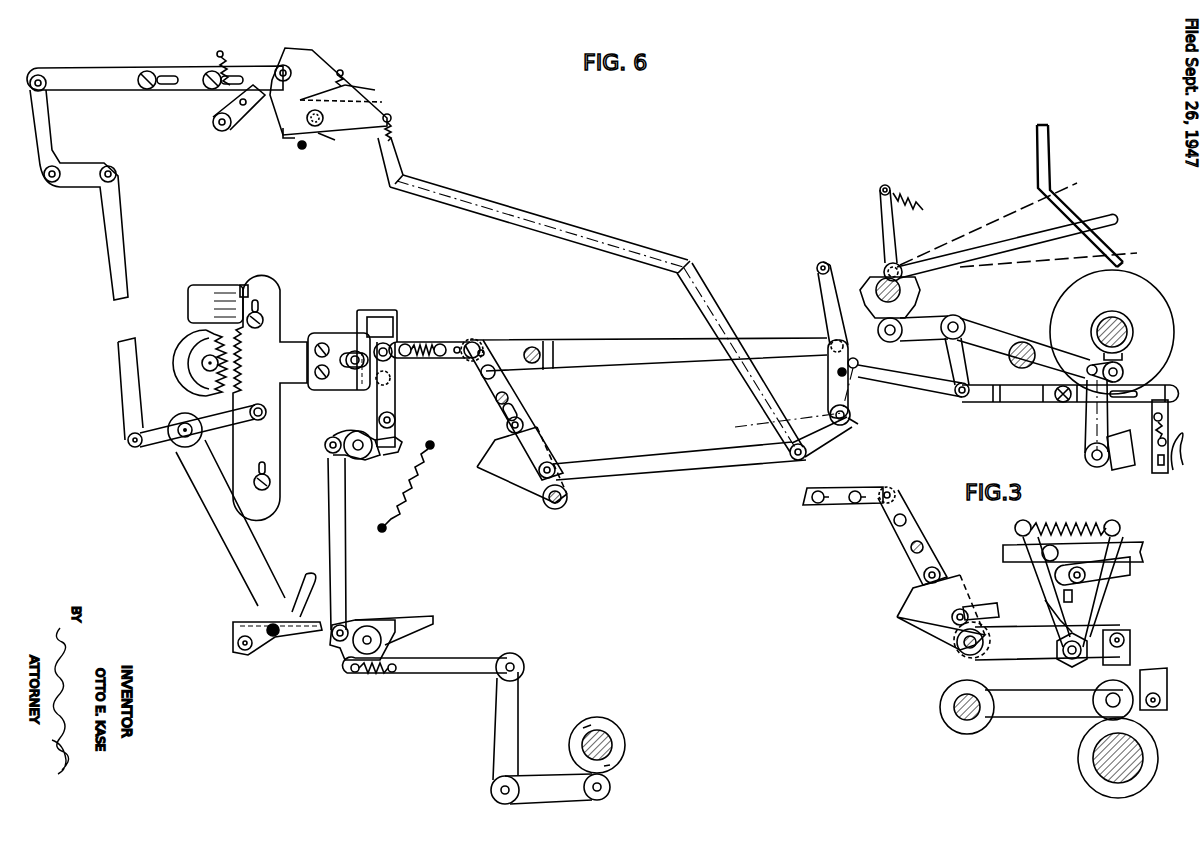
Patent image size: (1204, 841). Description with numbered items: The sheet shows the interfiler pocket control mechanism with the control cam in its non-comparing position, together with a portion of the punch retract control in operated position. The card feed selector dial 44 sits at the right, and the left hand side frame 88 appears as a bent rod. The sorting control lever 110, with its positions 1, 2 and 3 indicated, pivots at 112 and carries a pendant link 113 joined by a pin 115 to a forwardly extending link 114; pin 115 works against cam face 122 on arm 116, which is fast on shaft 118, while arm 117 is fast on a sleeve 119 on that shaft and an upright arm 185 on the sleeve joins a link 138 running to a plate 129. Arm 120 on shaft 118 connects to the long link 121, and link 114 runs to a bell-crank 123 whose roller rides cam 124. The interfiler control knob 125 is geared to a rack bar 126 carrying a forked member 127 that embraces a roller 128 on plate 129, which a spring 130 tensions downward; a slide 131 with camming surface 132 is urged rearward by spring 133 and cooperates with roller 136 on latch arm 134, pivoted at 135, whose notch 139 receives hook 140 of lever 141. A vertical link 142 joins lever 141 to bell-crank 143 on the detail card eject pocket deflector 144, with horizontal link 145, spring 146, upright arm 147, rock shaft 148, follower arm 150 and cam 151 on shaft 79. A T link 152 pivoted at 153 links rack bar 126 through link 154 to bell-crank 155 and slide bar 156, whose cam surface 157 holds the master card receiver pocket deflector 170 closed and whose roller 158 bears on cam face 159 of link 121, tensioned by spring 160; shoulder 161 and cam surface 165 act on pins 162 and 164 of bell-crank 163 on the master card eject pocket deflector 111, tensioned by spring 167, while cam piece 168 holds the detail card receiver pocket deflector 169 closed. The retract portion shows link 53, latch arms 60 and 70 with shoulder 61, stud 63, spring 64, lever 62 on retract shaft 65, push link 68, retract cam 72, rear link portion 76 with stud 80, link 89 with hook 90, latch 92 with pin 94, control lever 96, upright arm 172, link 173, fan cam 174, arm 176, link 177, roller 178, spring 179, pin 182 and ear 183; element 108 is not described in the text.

In FIG. 6, the position 1 of sorting control lever 1 is at (997, 218).
In FIG. 6, the position 2 of sorting control lever 2 is at (1116, 219).
In FIG. 6, the position 3 of sorting control lever 3 is at (1054, 255).
In FIG. 6, the card feed selector dial 44 is at (1150, 295).
In FIG. 3, the link 53 is at (1135, 542).
In FIG. 3, the latch arm 60 is at (1060, 596).
In FIG. 3, the shoulder 61 is at (1045, 604).
In FIG. 3, the lever 62 is at (1020, 652).
In FIG. 3, the stud 63 is at (1070, 632).
In FIG. 3, the spring 64 is at (1063, 526).
In FIG. 6, the retract shaft 65 is at (566, 503).
In FIG. 3, the retract shaft 65 is at (975, 655).
In FIG. 3, the push link 68 is at (1142, 665).
In FIG. 3, the latch arm 70 is at (1100, 608).
In FIG. 3, the retract cam 72 is at (1158, 760).
In FIG. 3, the rear portion of compound link 76 is at (1132, 566).
In FIG. 6, the shaft 79 is at (608, 728).
In FIG. 3, the shaft 79 is at (1135, 746).
In FIG. 3, the stud 80 is at (1086, 580).
In FIG. 6, the left hand side frame 88 is at (1050, 132).
In FIG. 6, the link 89 is at (1008, 404).
In FIG. 6, the hooked portion 90 is at (1172, 375).
In FIG. 6, the latch 92 is at (1152, 422).
In FIG. 6, the pin 94 is at (1158, 452).
In FIG. 6, the control lever 96 is at (1125, 468).
In FIG. 6, the hook 108 is at (1174, 466).
In FIG. 6, the sorting control lever 110 is at (1005, 244).
In FIG. 6, the master card eject pocket deflector 111 is at (390, 101).
In FIG. 6, the pivot 112 is at (897, 262).
In FIG. 6, the pendant link 113 is at (818, 298).
In FIG. 6, the link 114 is at (905, 376).
In FIG. 6, the pin 115 is at (838, 376).
In FIG. 6, the arm 116 is at (858, 390).
In FIG. 6, the arm 117 is at (830, 412).
In FIG. 6, the shaft 118 is at (845, 426).
In FIG. 6, the sleeve 119 is at (858, 424).
In FIG. 6, the arm 120 is at (818, 452).
In FIG. 6, the link 121 is at (750, 392).
In FIG. 6, the cam face 122 is at (858, 361).
In FIG. 6, the bell-crank 123 is at (950, 363).
In FIG. 6, the cam 124 is at (920, 290).
In FIG. 6, the interfiler control knob 125 is at (180, 352).
In FIG. 6, the rack bar 126 is at (274, 292).
In FIG. 6, the forked member 127 is at (316, 333).
In FIG. 6, the roller 128 is at (352, 350).
In FIG. 6, the plate 129 is at (378, 310).
In FIG. 6, the spring 130 is at (410, 510).
In FIG. 6, the slide 131 is at (430, 340).
In FIG. 3, the slide 131 is at (832, 505).
In FIG. 6, the camming surface 132 is at (400, 340).
In FIG. 6, the spring 133 is at (468, 341).
In FIG. 6, the latch arm 134 is at (397, 398).
In FIG. 6, the pivot 135 is at (376, 382).
In FIG. 6, the roller 136 is at (379, 327).
In FIG. 6, the link 138 is at (617, 341).
In FIG. 6, the notch 139 is at (393, 455).
In FIG. 6, the hook 140 is at (358, 459).
In FIG. 6, the lever 141 is at (345, 434).
In FIG. 6, the vertical link 142 is at (328, 520).
In FIG. 6, the bell-crank 143 is at (350, 620).
In FIG. 6, the detail card eject pocket deflector 144 is at (420, 618).
In FIG. 6, the horizontal link 145 is at (460, 658).
In FIG. 6, the spring 146 is at (378, 677).
In FIG. 6, the upright arm 147 is at (519, 690).
In FIG. 6, the rock shaft 148 is at (491, 790).
In FIG. 6, the follower arm 150 is at (546, 776).
In FIG. 6, the cam 151 is at (627, 745).
In FIG. 6, the T link 152 is at (213, 542).
In FIG. 6, the pivot 153 is at (178, 422).
In FIG. 6, the link 154 is at (138, 398).
In FIG. 6, the bell-crank 155 is at (84, 170).
In FIG. 6, the slide bar 156 is at (113, 91).
In FIG. 6, the cam surface 157 is at (252, 70).
In FIG. 6, the roller 158 is at (284, 64).
In FIG. 6, the cam face 159 is at (325, 66).
In FIG. 6, the spring 160 is at (344, 74).
In FIG. 6, the shoulder 161 is at (370, 90).
In FIG. 6, the pin 162 is at (325, 126).
In FIG. 6, the bell-crank 163 is at (330, 141).
In FIG. 6, the pin 164 is at (298, 145).
In FIG. 6, the cam surface 165 is at (280, 137).
In FIG. 6, the spring 167 is at (395, 130).
In FIG. 6, the cam piece 168 is at (300, 600).
In FIG. 6, the detail card receiver pocket deflector 169 is at (276, 640).
In FIG. 6, the master card receiver pocket deflector 170 is at (213, 110).
In FIG. 6, the upright arm 172 is at (1086, 428).
In FIG. 6, the link 173 is at (693, 456).
In FIG. 3, the link 173 is at (985, 603).
In FIG. 6, the fan cam 174 is at (505, 470).
In FIG. 3, the fan cam 174 is at (895, 612).
In FIG. 6, the arm 176 is at (556, 447).
In FIG. 6, the link 177 is at (560, 410).
In FIG. 6, the roller 178 is at (556, 420).
In FIG. 6, the spring 179 is at (512, 384).
In FIG. 3, the spring 179 is at (900, 545).
In FIG. 6, the pin 182 is at (482, 343).
In FIG. 3, the pin 182 is at (890, 486).
In FIG. 6, the ear 183 is at (490, 348).
In FIG. 3, the ear 183 is at (897, 490).
In FIG. 6, the upright arm 185 is at (826, 372).